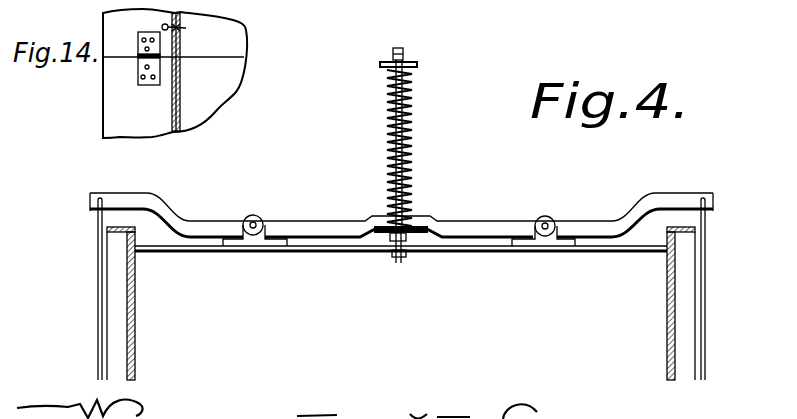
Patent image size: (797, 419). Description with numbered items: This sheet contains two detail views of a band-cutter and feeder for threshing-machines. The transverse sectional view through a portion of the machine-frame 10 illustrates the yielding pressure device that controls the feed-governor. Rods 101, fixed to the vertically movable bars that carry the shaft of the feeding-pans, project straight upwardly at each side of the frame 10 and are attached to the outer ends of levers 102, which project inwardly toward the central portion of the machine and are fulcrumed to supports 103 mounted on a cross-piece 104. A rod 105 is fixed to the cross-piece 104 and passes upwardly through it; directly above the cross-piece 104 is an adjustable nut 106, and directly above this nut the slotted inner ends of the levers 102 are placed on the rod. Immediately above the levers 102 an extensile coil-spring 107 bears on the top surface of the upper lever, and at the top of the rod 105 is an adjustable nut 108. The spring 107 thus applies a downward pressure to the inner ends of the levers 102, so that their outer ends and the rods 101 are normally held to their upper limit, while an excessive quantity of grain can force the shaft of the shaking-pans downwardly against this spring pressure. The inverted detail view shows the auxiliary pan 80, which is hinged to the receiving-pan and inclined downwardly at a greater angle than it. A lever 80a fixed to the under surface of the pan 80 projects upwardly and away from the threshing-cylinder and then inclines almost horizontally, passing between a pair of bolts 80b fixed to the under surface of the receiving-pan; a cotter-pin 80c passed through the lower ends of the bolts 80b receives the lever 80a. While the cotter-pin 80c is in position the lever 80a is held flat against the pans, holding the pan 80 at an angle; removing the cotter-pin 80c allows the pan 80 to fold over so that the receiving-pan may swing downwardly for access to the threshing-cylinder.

In FIG. 4, the frame of the machine 10 is at (130, 297).
In FIG. 4, the rods 101 is at (99, 320).
In FIG. 4, the levers 102 is at (208, 230).
In FIG. 4, the supports 103 is at (261, 222).
In FIG. 4, the cross-piece 104 is at (333, 249).
In FIG. 4, the rod 105 is at (410, 138).
In FIG. 4, the adjustable nut 106 is at (406, 236).
In FIG. 4, the extensile coil-spring 107 is at (405, 178).
In FIG. 4, the adjustable nut 108 is at (418, 64).
In FIG. 14, the auxiliary pan 80 is at (205, 103).
In FIG. 14, the levers 80a is at (182, 80).
In FIG. 14, the bolts 80b is at (176, 33).
In FIG. 14, the cotter-pin 80c is at (186, 26).